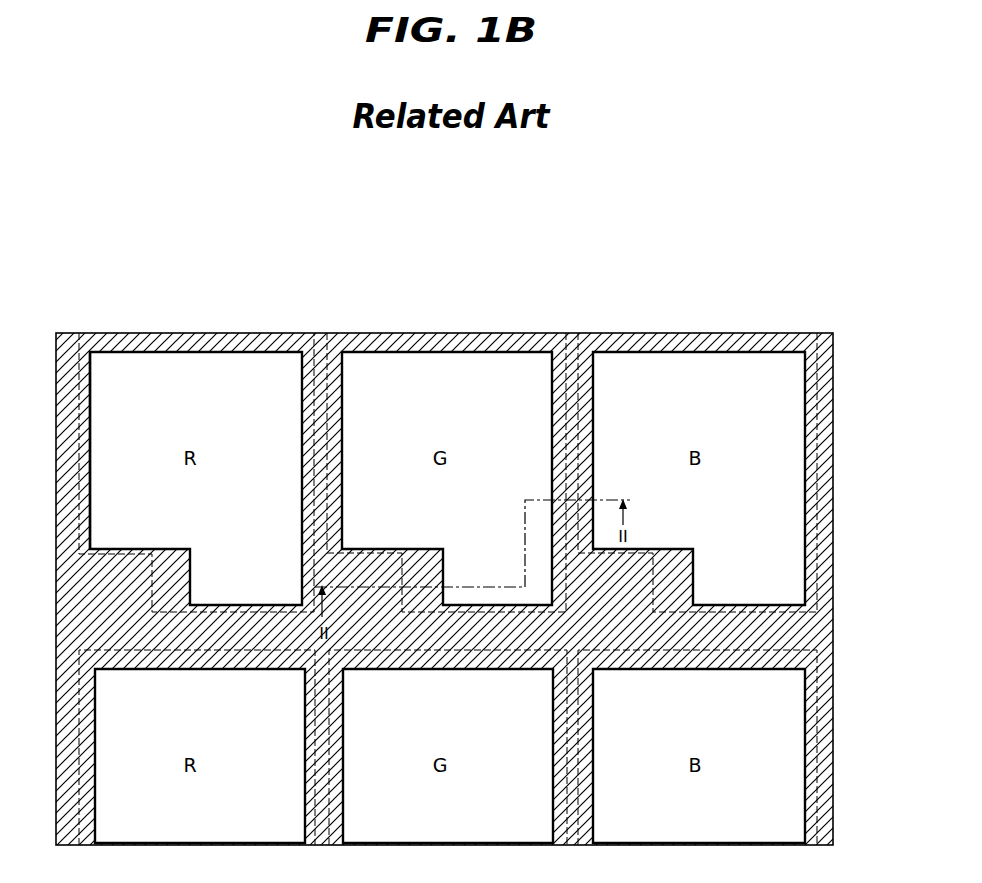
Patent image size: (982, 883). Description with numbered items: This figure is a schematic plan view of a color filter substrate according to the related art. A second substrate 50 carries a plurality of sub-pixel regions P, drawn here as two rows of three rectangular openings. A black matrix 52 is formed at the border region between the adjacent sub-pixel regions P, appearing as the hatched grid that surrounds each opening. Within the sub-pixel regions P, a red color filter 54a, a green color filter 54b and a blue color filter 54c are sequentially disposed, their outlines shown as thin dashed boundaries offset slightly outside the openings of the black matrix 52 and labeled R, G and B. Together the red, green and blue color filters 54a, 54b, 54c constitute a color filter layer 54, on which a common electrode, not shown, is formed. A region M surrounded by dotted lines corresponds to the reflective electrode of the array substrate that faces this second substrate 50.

The second substrate 50 is at (833, 422).
The black matrix 52 is at (507, 352).
The color filter layer 54 is at (448, 523).
The red color filter 54a is at (265, 365).
The green color filter 54b is at (453, 365).
The blue color filter 54c is at (697, 553).
The sub-pixel region P is at (148, 366).
The region corresponding to reflective electrode M is at (91, 424).